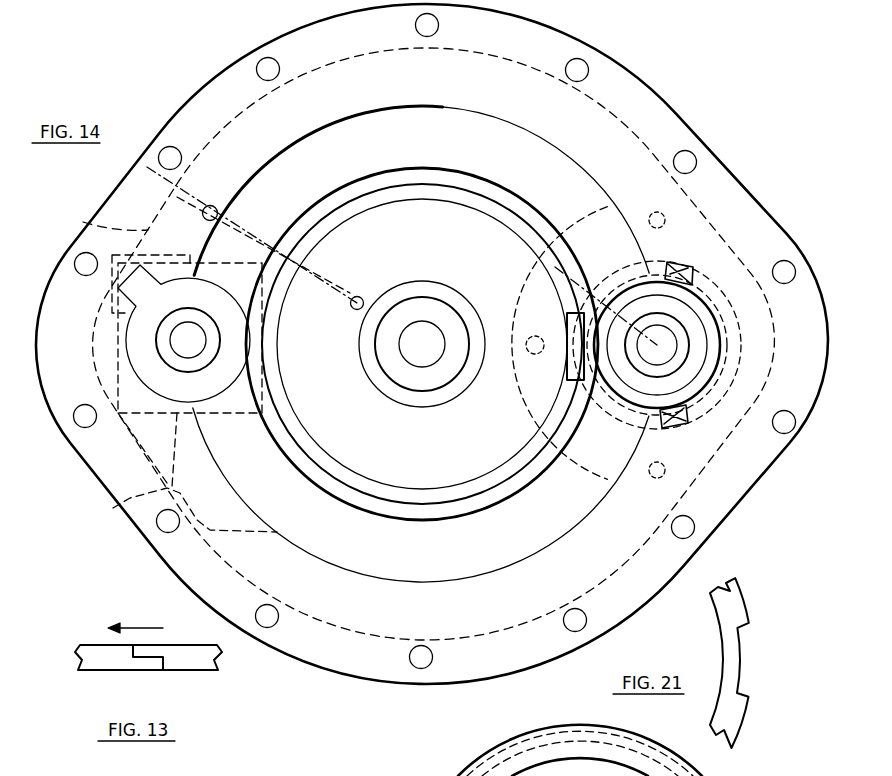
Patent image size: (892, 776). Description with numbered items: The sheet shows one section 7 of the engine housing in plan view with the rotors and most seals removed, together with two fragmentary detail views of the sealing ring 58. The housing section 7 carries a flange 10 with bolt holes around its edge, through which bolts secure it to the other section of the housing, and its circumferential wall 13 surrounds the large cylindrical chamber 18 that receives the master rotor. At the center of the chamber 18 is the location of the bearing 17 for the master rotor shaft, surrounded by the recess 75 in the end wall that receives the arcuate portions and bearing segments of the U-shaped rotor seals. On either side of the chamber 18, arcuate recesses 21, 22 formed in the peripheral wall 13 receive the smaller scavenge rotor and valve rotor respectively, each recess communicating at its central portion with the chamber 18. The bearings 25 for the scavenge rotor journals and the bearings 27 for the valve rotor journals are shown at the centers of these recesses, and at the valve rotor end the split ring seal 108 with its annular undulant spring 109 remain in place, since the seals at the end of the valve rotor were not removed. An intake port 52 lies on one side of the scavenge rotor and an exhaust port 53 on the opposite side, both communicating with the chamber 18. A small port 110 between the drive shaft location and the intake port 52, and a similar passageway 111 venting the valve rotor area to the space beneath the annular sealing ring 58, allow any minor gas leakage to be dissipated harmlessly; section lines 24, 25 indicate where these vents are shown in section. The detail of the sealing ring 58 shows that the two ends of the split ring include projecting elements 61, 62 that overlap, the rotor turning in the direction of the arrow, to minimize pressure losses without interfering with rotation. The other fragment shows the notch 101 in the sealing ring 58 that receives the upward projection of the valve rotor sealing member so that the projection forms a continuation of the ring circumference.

In FIG. 14, the housing section 7 is at (656, 92).
In FIG. 14, the flange 10 is at (705, 157).
In FIG. 14, the circumferential wall 13 is at (573, 165).
In FIG. 21, the circumferential wall 13 is at (452, 757).
In FIG. 14, the bearings 17 is at (432, 312).
In FIG. 14, the cylindrical chamber 18 is at (290, 148).
In FIG. 14, the arcuate recess 21 is at (167, 400).
In FIG. 14, the arcuate recess 22 is at (718, 362).
In FIG. 14, the section line 24 is at (155, 158).
In FIG. 14, the bearings 25 is at (215, 347).
In FIG. 14, the bearings 27 is at (677, 328).
In FIG. 14, the intake port 52 is at (84, 221).
In FIG. 14, the exhaust port 53 is at (130, 500).
In FIG. 13, the sealing ring 58 is at (210, 662).
In FIG. 21, the sealing ring 58 is at (733, 713).
In FIG. 13, the projecting element 61 is at (140, 654).
In FIG. 13, the projecting element 62 is at (160, 666).
In FIG. 14, the recess 75 is at (387, 397).
In FIG. 21, the notch 101 is at (740, 658).
In FIG. 14, the split ring seal 108 is at (643, 413).
In FIG. 14, the annular undulant spring 109 is at (570, 332).
In FIG. 14, the port 110 is at (336, 268).
In FIG. 14, the passageway 111 is at (600, 295).